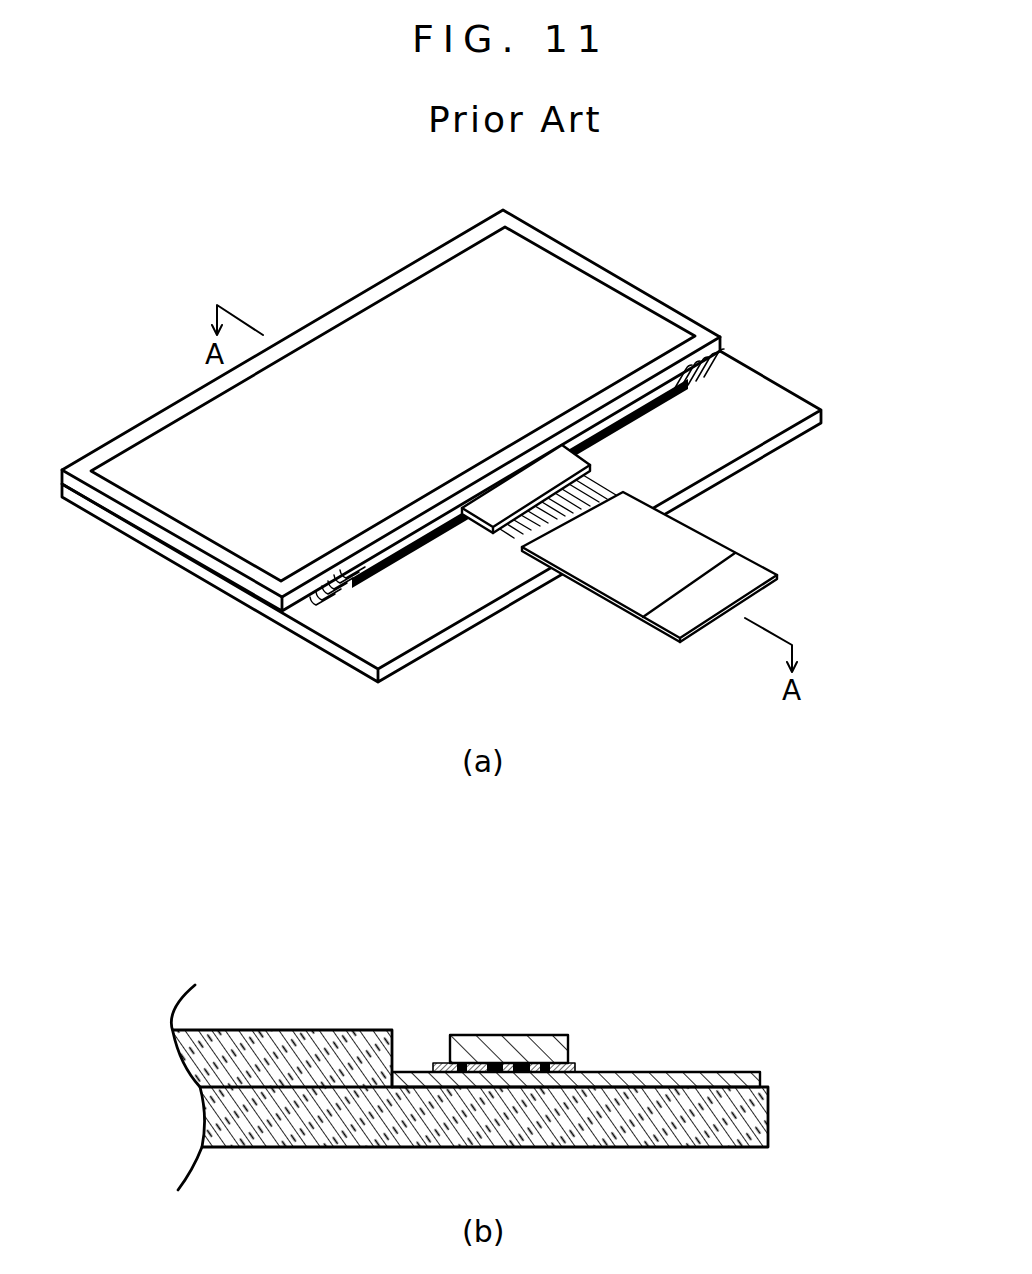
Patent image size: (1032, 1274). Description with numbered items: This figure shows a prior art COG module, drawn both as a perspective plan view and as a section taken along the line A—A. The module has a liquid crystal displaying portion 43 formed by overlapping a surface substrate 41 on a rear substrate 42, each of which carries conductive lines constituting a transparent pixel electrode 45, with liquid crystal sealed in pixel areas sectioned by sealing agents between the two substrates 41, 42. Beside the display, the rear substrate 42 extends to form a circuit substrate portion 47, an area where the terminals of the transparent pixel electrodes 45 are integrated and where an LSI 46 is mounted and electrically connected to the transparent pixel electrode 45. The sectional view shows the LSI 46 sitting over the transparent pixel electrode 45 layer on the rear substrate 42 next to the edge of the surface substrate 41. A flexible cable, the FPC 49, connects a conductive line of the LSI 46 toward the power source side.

The surface substrate 41 is at (598, 257).
The rear substrate 42 is at (155, 555).
The liquid crystal displaying portion 43 is at (405, 429).
The transparent pixel electrode 45 is at (710, 373).
The LSI 46 is at (575, 470).
The circuit substrate portion 47 is at (755, 439).
The FPC 49 is at (700, 548).